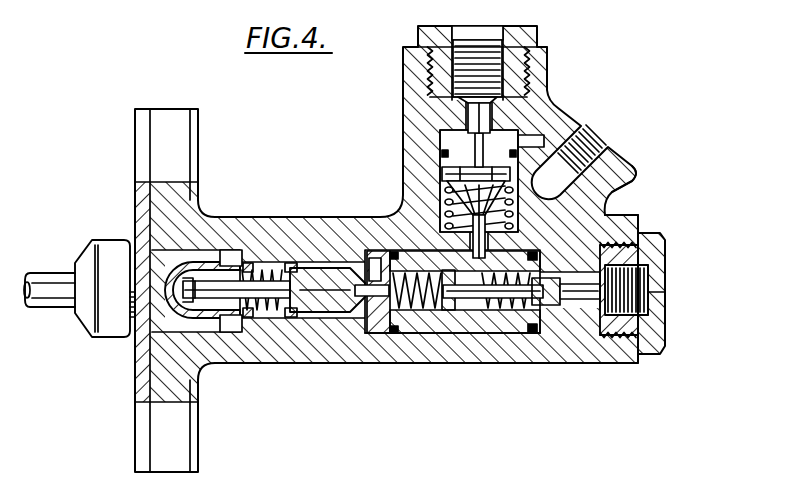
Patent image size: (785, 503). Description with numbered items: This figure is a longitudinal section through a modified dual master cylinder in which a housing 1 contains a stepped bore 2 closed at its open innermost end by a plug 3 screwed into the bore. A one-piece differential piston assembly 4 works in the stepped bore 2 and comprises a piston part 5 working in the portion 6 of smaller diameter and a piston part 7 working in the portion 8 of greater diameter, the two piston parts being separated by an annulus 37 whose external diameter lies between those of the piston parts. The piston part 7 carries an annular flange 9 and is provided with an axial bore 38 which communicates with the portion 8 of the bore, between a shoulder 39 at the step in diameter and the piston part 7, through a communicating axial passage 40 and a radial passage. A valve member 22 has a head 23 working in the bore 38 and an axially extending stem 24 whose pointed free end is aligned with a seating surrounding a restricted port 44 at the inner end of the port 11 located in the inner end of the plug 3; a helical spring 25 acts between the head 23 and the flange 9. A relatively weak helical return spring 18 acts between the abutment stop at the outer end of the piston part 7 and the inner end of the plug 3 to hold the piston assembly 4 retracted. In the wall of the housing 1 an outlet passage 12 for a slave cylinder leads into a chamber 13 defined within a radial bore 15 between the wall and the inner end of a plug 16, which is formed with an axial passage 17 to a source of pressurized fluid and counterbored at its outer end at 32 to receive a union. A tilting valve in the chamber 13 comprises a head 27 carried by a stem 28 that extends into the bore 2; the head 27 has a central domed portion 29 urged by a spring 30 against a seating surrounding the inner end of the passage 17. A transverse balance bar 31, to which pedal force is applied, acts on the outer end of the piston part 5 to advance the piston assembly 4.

The housing 1 is at (261, 340).
The stepped bore 2 is at (556, 340).
The plug 3 is at (660, 345).
The differential piston assembly 4 is at (344, 342).
The piston part 5 is at (306, 334).
The portion of the bore of smaller diameter 6 is at (336, 334).
The piston part 7 is at (470, 333).
The portion of the bore of greater diameter 8 is at (364, 340).
The annular flange 9 is at (408, 333).
The port 11 is at (600, 291).
The outlet passage 12 is at (592, 200).
The chamber 13 is at (438, 215).
The radial bore 15 is at (448, 183).
The plug 16 is at (547, 54).
The axial passage 17 is at (547, 96).
The helical return spring 18 is at (650, 234).
The valve member 22 is at (545, 305).
The head 23 is at (490, 333).
The stem 24 is at (614, 360).
The helical spring 25 is at (452, 333).
The head 27 is at (455, 152).
The stem 28 is at (512, 247).
The domed portion 29 is at (505, 135).
The spring 30 is at (553, 162).
The balance bar 31 is at (160, 318).
The counterbore 32 is at (538, 26).
The annulus 37 is at (378, 345).
The axial bore 38 is at (450, 333).
The shoulder 39 is at (312, 217).
The axial passage 40 is at (368, 217).
The restricted port 44 is at (648, 262).